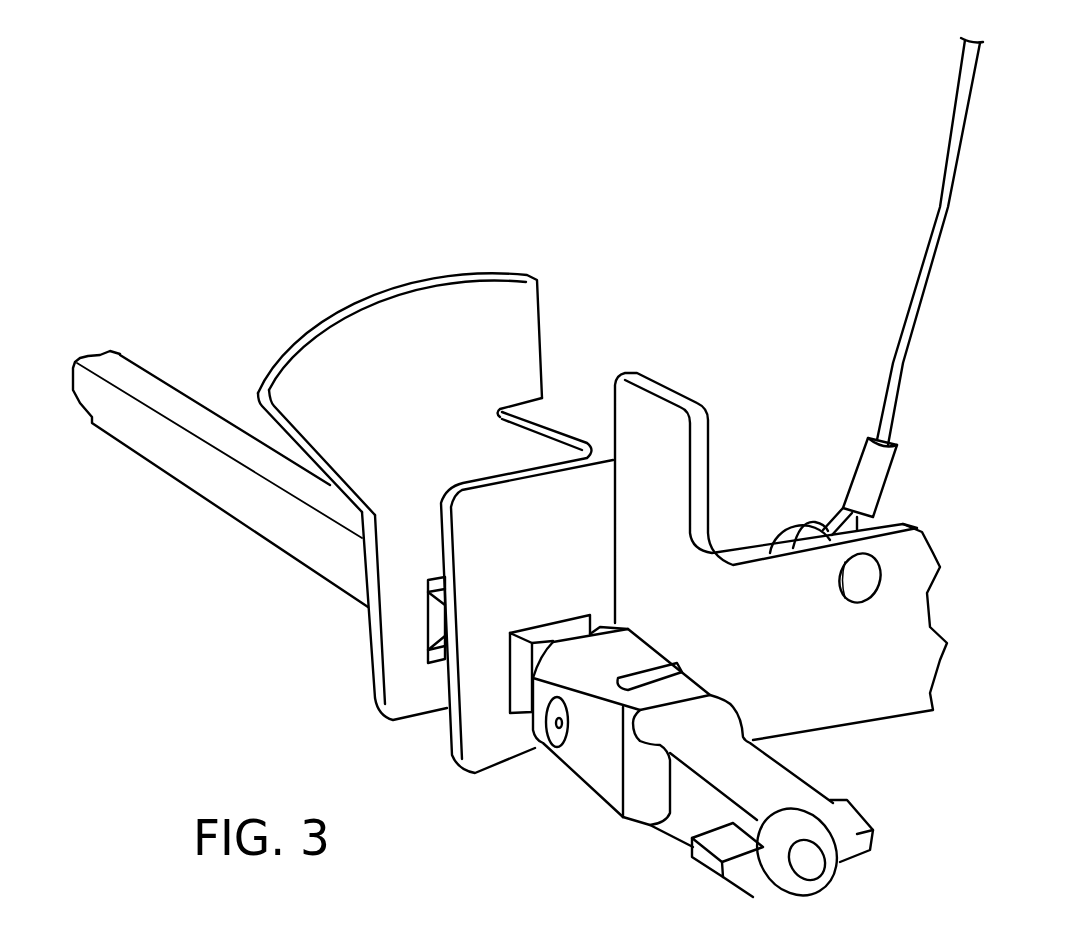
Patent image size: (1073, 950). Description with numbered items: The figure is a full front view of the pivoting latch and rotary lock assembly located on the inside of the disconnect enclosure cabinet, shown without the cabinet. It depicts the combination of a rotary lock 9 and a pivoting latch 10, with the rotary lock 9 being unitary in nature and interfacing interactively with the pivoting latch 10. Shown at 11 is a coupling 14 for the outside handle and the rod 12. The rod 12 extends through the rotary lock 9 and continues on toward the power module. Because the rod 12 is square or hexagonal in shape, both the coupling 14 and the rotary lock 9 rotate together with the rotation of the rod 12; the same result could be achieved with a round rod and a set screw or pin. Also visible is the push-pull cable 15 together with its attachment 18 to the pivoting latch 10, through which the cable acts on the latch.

The rotary lock 9 is at (418, 308).
The pivoting latch 10 is at (947, 653).
The coupling location 11 is at (605, 622).
The rod 12 is at (175, 400).
The coupling 14 is at (613, 785).
The push-pull cable 15 is at (940, 208).
The attachment 18 is at (882, 472).